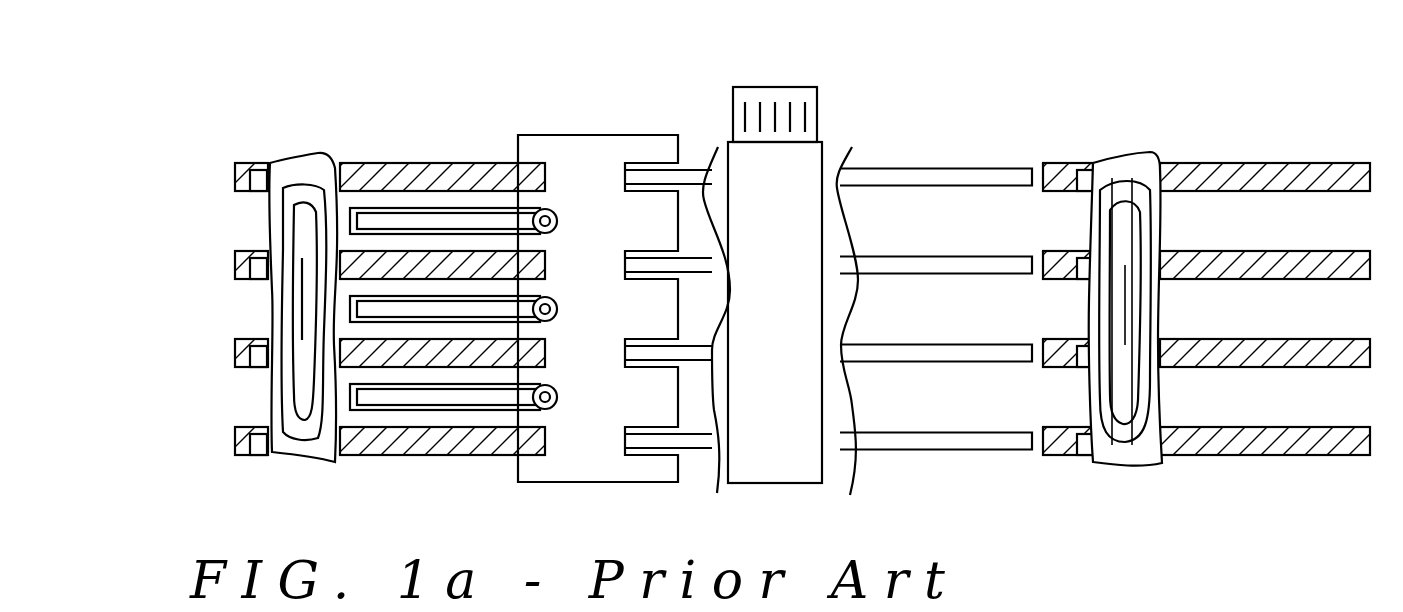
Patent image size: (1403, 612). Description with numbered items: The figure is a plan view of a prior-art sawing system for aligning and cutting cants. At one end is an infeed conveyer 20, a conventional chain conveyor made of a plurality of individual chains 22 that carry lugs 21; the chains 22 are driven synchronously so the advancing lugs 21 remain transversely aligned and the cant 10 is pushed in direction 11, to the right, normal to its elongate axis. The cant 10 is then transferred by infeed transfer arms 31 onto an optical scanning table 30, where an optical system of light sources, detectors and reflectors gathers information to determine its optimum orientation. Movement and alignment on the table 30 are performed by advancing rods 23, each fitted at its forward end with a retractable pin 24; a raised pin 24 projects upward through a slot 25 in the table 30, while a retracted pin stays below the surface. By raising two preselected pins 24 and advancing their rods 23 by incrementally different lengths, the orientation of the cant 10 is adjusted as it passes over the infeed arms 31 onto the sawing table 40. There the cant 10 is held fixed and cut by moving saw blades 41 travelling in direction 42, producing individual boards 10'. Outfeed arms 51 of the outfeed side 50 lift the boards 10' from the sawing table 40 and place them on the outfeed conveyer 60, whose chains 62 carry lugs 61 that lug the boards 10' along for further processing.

The cant 10 is at (303, 347).
The boards 10' is at (1125, 339).
The direction 11 is at (235, 95).
The infeed conveyer 20 is at (404, 293).
The lugs 21 is at (257, 168).
The chains 22 is at (372, 442).
The advancing rod 23 is at (437, 405).
The retractable pin 24 is at (558, 420).
The slot 25 is at (613, 395).
The optical scanning table 30 is at (618, 287).
The infeed transfer arms 31 is at (703, 445).
The sawing table 40 is at (799, 171).
The saw 41 is at (778, 90).
The direction 42 is at (830, 248).
The outfeed arms 50 is at (936, 281).
The outfeed arms 51 is at (968, 452).
The outfeed conveyer 60 is at (1206, 281).
The lugs 61 is at (1089, 172).
The chains 62 is at (1273, 457).